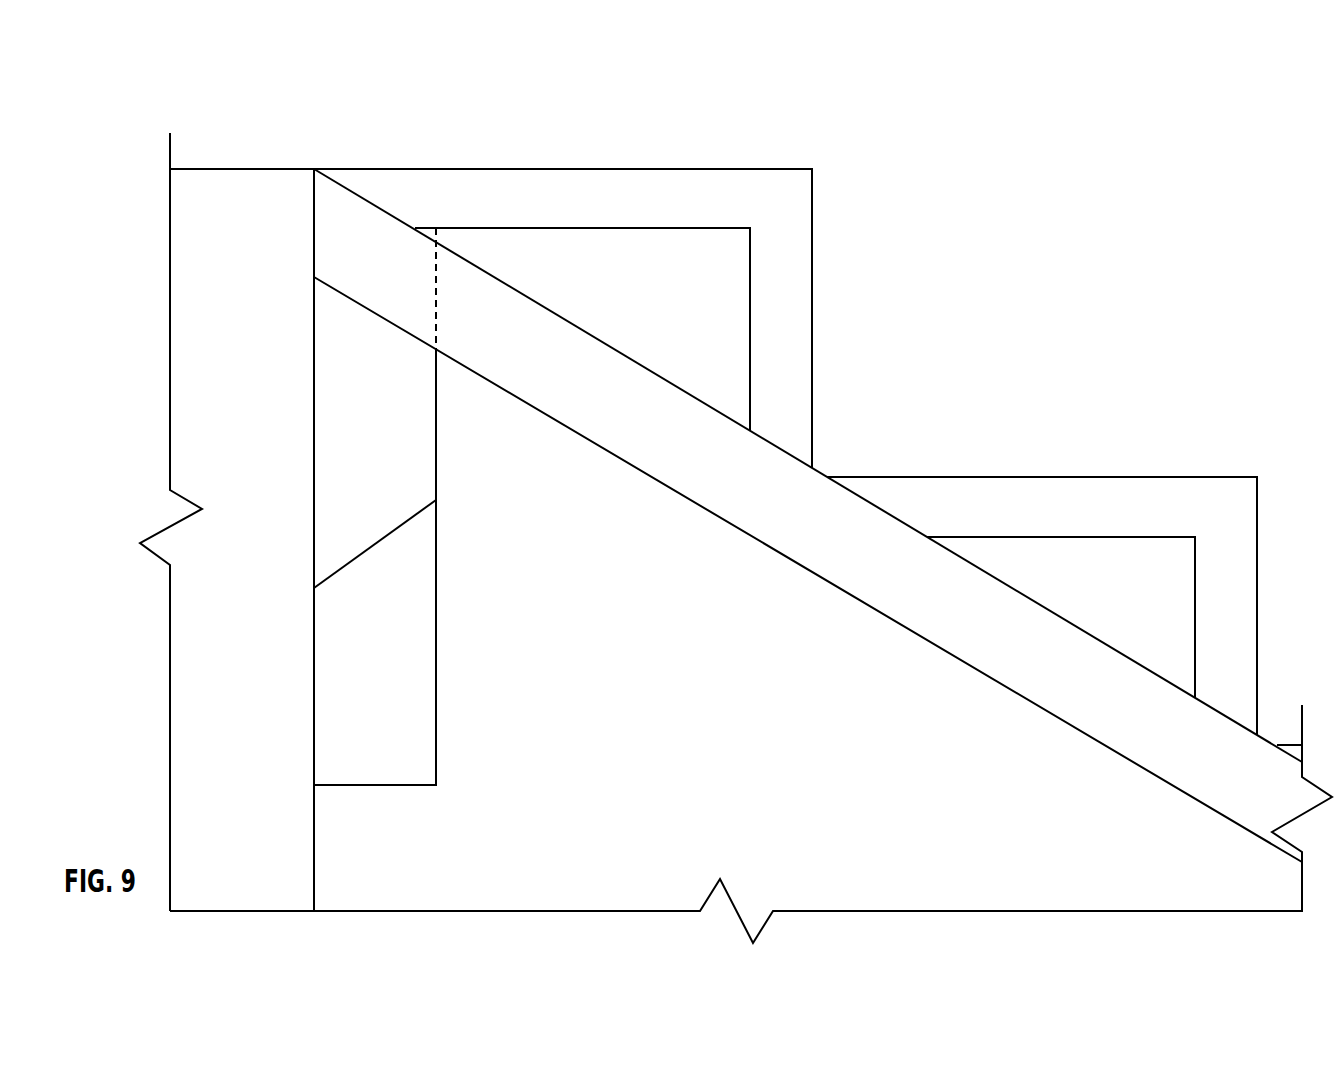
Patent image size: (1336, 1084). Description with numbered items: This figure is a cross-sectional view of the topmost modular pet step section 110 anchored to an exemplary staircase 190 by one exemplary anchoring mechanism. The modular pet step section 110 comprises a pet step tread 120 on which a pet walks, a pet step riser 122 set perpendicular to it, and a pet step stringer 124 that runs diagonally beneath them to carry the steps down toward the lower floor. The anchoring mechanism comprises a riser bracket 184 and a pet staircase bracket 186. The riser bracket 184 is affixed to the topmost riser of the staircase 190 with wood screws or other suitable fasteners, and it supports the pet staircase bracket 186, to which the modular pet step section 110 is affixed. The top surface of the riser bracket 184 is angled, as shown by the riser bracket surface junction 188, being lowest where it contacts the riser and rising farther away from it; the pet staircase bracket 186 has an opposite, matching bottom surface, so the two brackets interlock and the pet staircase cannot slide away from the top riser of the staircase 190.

The modular pet step section 110 is at (1083, 423).
The pet step tread 120 is at (972, 477).
The pet step riser 122 is at (812, 329).
The pet step stringer 124 is at (745, 535).
The riser bracket 184 is at (436, 659).
The pet staircase bracket 186 is at (438, 424).
The riser bracket surface junction 188 is at (385, 538).
The staircase 190 is at (225, 217).